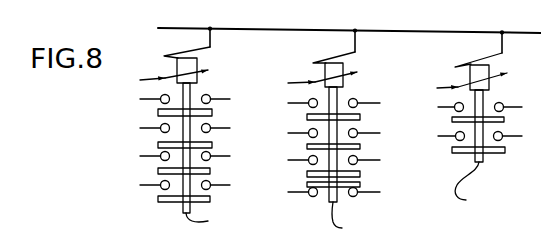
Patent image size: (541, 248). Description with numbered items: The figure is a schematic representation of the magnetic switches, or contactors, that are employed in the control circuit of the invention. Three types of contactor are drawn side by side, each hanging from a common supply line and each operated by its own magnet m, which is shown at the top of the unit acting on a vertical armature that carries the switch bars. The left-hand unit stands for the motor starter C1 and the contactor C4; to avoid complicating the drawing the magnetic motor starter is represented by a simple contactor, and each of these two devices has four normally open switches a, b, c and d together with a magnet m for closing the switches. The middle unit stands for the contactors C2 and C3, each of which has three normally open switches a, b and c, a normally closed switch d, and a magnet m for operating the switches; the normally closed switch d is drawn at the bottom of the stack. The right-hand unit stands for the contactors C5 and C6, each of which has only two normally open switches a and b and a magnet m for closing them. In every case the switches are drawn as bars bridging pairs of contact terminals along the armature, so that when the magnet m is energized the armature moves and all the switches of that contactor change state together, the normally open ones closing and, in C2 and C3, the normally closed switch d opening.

The magnet m is at (203, 55).
The switch a is at (212, 112).
The switch b is at (212, 145).
The switch c is at (210, 171).
The switch d is at (158, 202).
The contactor C1 is at (222, 238).
The contactor C4 is at (231, 235).
The contactor C2 is at (357, 210).
The contactor C3 is at (365, 239).
The contactor C5 is at (475, 218).
The contactor C6 is at (483, 210).